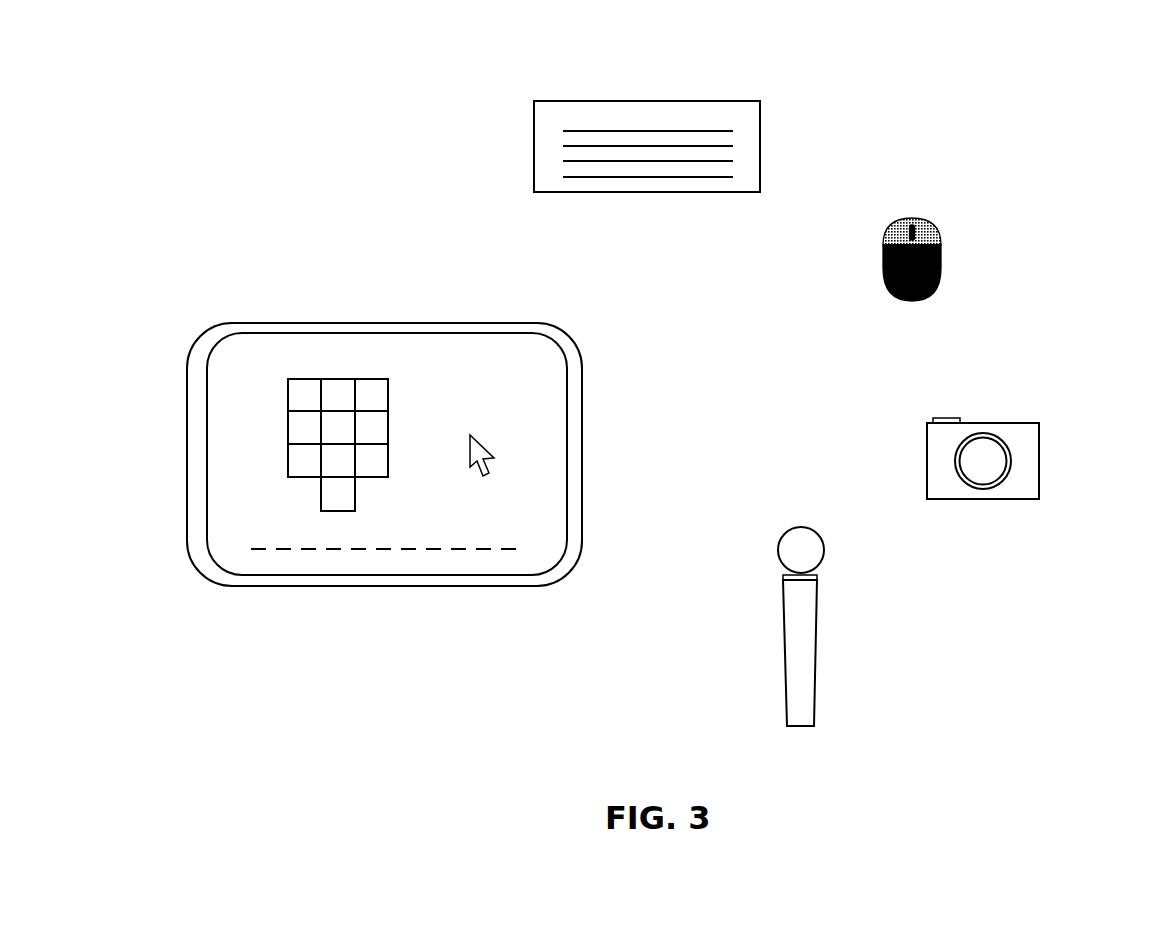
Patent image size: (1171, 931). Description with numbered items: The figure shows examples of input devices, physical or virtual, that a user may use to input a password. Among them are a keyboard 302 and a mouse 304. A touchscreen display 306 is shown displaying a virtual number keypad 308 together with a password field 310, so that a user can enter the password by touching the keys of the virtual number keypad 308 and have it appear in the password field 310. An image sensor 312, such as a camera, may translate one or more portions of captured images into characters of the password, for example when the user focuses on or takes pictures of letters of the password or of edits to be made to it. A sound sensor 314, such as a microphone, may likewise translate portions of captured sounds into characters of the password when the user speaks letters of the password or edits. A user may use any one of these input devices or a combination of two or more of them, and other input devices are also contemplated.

The keyboard 302 is at (650, 101).
The mouse 304 is at (942, 267).
The touchscreen display 306 is at (582, 464).
The virtual number keypad 308 is at (337, 380).
The password field 310 is at (376, 548).
The image sensor 312 is at (1039, 460).
The sound sensor 314 is at (817, 652).